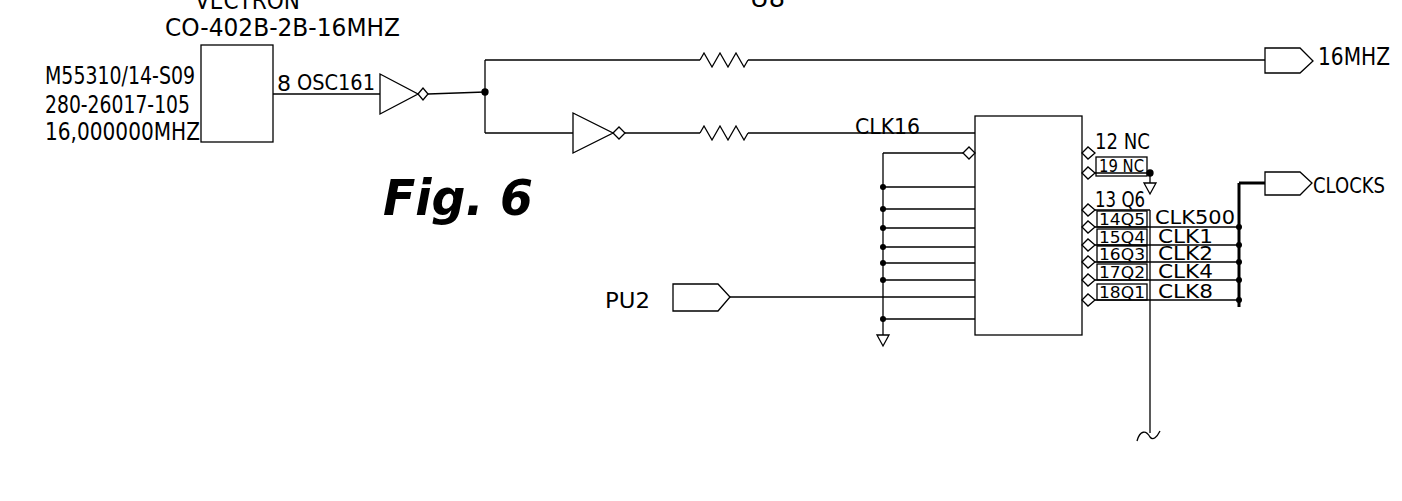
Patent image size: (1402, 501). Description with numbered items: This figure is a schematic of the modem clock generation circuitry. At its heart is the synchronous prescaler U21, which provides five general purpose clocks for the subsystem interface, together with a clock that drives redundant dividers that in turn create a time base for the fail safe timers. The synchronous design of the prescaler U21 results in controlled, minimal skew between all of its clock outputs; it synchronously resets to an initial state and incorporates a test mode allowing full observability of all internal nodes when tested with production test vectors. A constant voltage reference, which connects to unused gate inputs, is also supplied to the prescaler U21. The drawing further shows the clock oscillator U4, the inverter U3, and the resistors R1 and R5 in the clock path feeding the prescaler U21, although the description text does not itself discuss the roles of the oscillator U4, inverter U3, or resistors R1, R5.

The clock oscillator U4 is at (237, 108).
The 54F04 inverter U3 is at (511, 111).
The 47.5 ohm resistor R1 is at (780, 58).
The 47.5 ohm resistor R5 is at (780, 131).
The synchronous prescaler U21 is at (1000, 235).